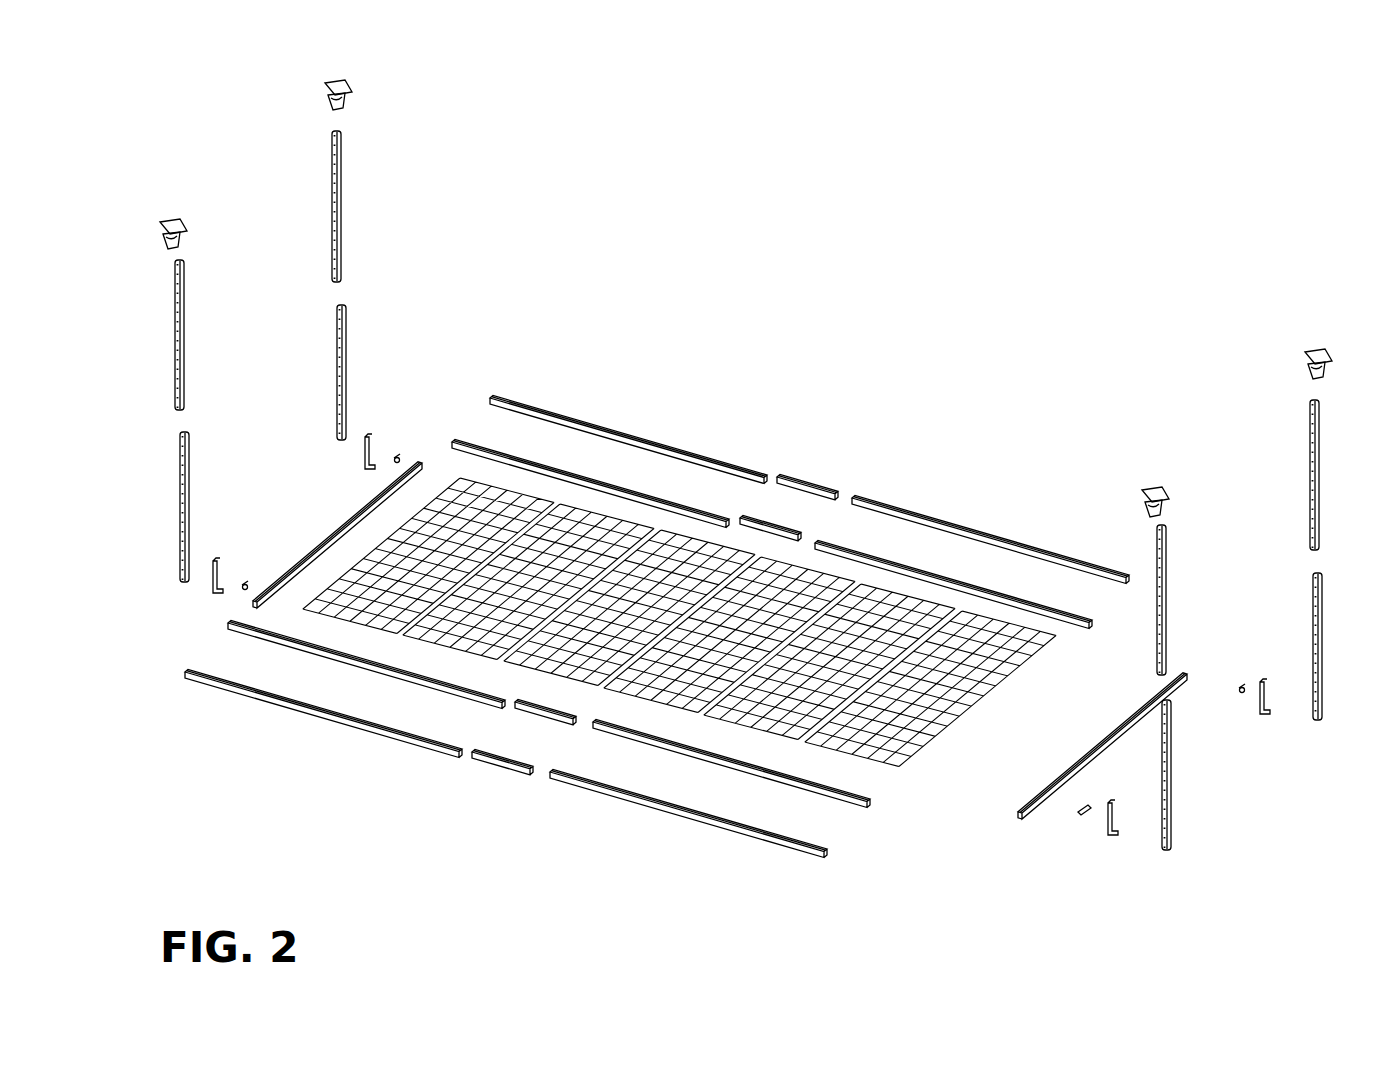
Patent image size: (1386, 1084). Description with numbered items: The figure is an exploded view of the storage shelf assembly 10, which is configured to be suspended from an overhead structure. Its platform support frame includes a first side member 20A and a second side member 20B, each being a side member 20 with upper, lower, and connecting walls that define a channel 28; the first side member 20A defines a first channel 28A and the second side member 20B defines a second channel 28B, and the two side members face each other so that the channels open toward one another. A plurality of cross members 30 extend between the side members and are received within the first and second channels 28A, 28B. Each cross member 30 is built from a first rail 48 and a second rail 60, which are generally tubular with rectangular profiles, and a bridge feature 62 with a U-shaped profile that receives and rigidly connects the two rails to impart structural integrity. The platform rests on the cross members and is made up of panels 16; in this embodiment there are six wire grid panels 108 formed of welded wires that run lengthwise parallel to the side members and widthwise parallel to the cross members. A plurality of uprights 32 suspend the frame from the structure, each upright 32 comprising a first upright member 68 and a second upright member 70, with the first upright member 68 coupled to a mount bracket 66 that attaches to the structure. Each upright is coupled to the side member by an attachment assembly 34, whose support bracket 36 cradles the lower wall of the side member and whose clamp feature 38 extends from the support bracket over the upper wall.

The storage shelf assembly 10 is at (886, 380).
The panel 16 is at (681, 590).
The side member 20 is at (302, 553).
The first side member 20A is at (336, 534).
The second side member 20B is at (1138, 746).
The channel 28 is at (427, 465).
The first channel 28A is at (333, 528).
The second channel 28B is at (1110, 742).
The cross member 30 is at (247, 647).
The upright 32 is at (336, 311).
The attachment assembly 34 is at (703, 621).
The support bracket 36 is at (367, 462).
The clamp feature 38 is at (400, 462).
The first rail 48 is at (598, 482).
The second rail 60 is at (1000, 590).
The bridge feature 62 is at (775, 522).
The mount bracket 66 is at (330, 84).
The first upright member 68 is at (332, 170).
The second upright member 70 is at (337, 398).
The wire grid panel 108 is at (494, 515).